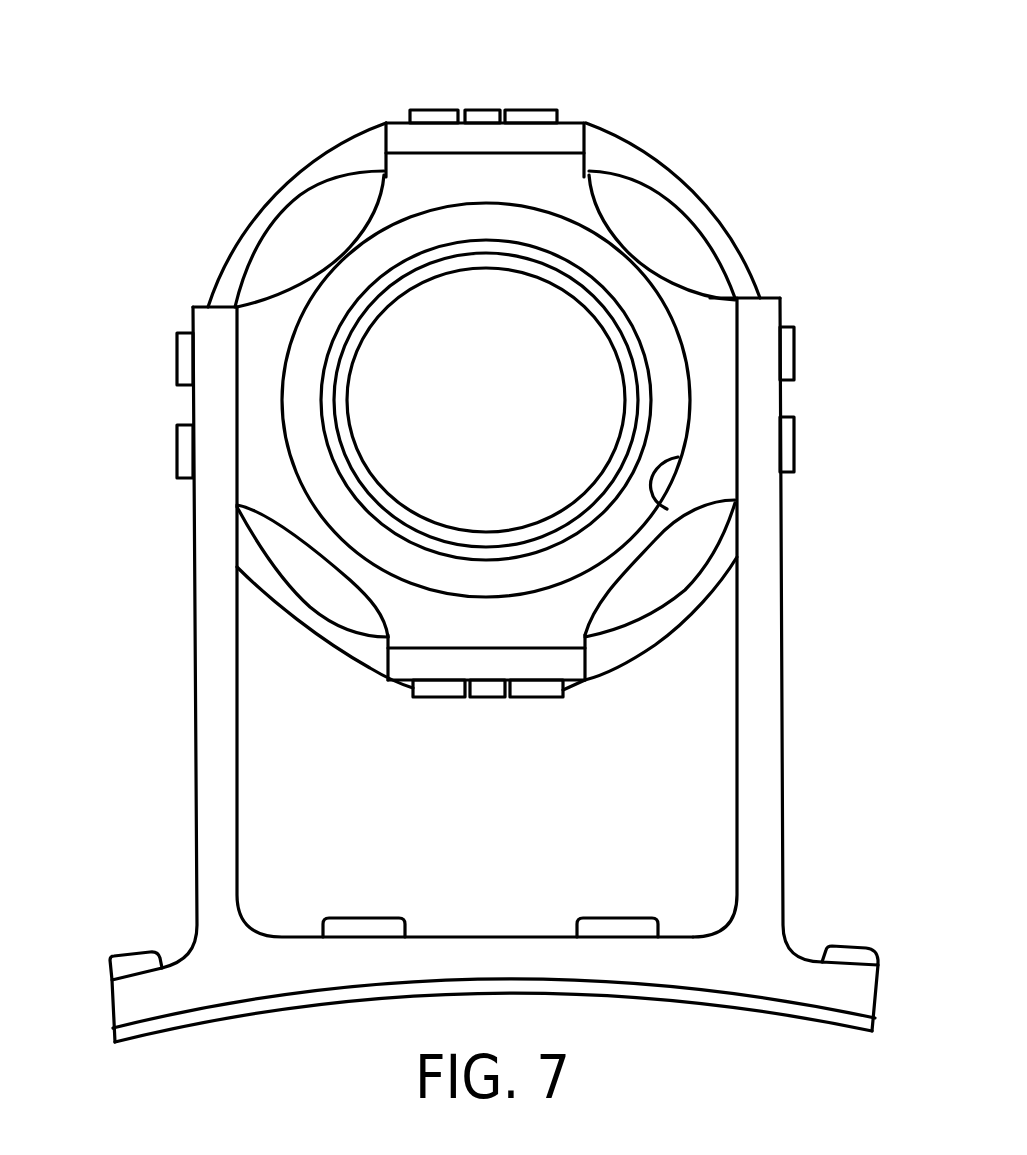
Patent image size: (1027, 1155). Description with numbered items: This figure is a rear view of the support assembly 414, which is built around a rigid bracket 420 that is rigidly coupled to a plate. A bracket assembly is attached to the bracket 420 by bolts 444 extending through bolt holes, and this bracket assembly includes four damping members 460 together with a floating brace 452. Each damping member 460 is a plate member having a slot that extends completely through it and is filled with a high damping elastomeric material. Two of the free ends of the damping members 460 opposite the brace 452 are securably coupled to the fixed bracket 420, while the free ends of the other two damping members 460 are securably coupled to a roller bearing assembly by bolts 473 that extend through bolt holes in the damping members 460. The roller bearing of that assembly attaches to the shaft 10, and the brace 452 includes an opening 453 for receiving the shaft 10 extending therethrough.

The shaft 10 is at (545, 522).
The support assembly 414 is at (755, 142).
The rigid bracket 420 is at (763, 644).
The bolts 444 is at (178, 345).
The floating brace 452 is at (703, 312).
The opening 453 is at (678, 458).
The damping members 460 is at (567, 136).
The bolts 473 is at (430, 109).